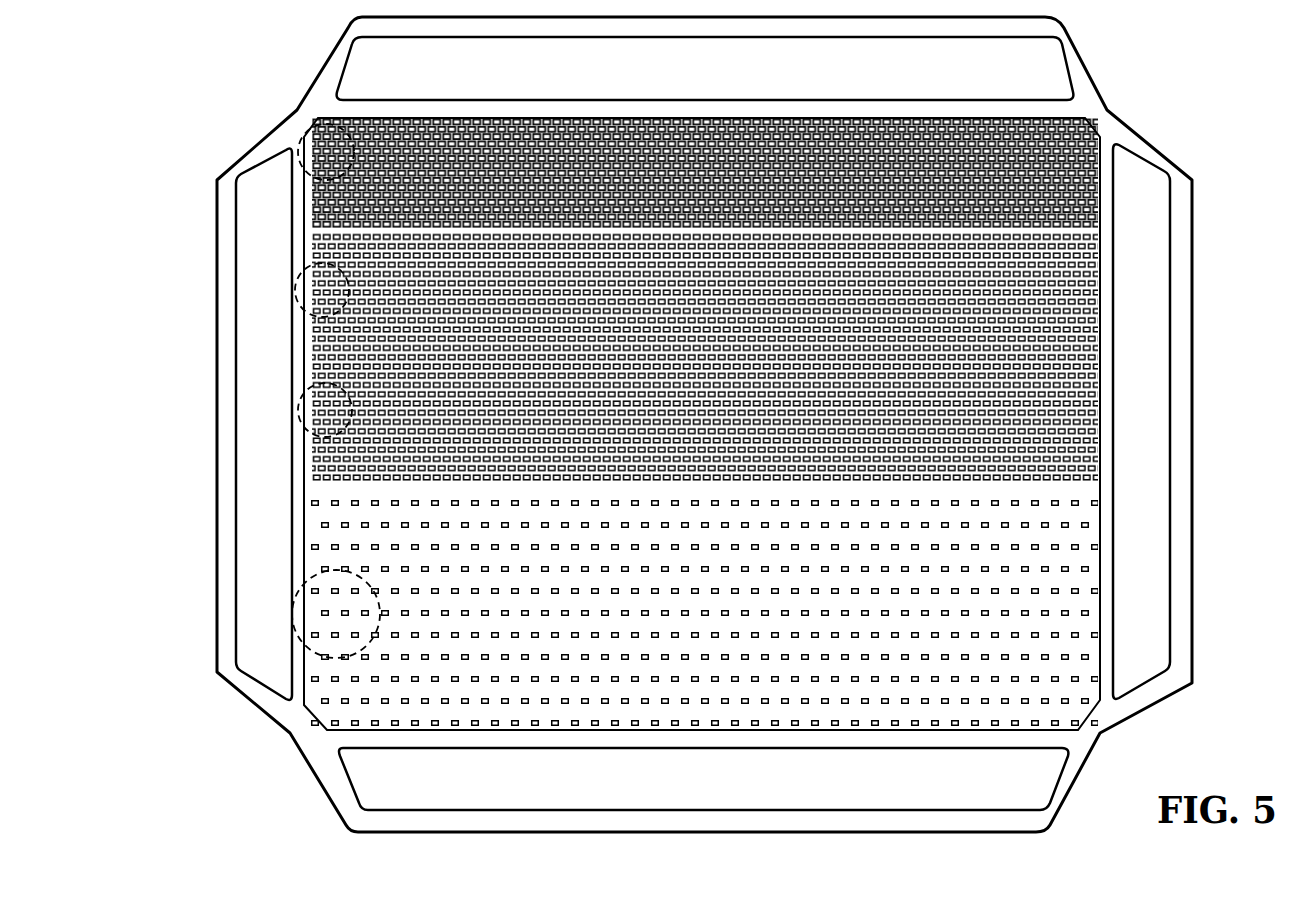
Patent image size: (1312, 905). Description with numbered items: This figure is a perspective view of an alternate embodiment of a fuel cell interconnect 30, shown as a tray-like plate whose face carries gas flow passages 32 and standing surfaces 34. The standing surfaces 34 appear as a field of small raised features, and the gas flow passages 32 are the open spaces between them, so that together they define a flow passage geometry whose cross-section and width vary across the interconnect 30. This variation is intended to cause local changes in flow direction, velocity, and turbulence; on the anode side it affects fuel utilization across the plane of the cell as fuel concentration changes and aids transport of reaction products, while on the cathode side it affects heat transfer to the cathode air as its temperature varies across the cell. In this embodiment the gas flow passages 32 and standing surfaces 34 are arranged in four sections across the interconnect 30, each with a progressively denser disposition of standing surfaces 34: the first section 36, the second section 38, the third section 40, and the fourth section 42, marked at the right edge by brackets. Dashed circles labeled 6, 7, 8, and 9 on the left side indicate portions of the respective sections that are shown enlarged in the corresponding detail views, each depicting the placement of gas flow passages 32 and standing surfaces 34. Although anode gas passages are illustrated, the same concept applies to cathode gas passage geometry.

The interconnect 30 is at (303, 84).
The gas flow passages 32 is at (347, 713).
The standing surfaces 34 is at (347, 482).
The first section 36 is at (712, 605).
The second section 38 is at (1097, 363).
The third section 40 is at (1097, 228).
The fourth section 42 is at (1097, 119).
The detail region of FIG. 6 is at (298, 652).
The detail region of FIG. 7 is at (300, 428).
The detail region of FIG. 8 is at (293, 264).
The detail region of FIG. 9 is at (292, 134).